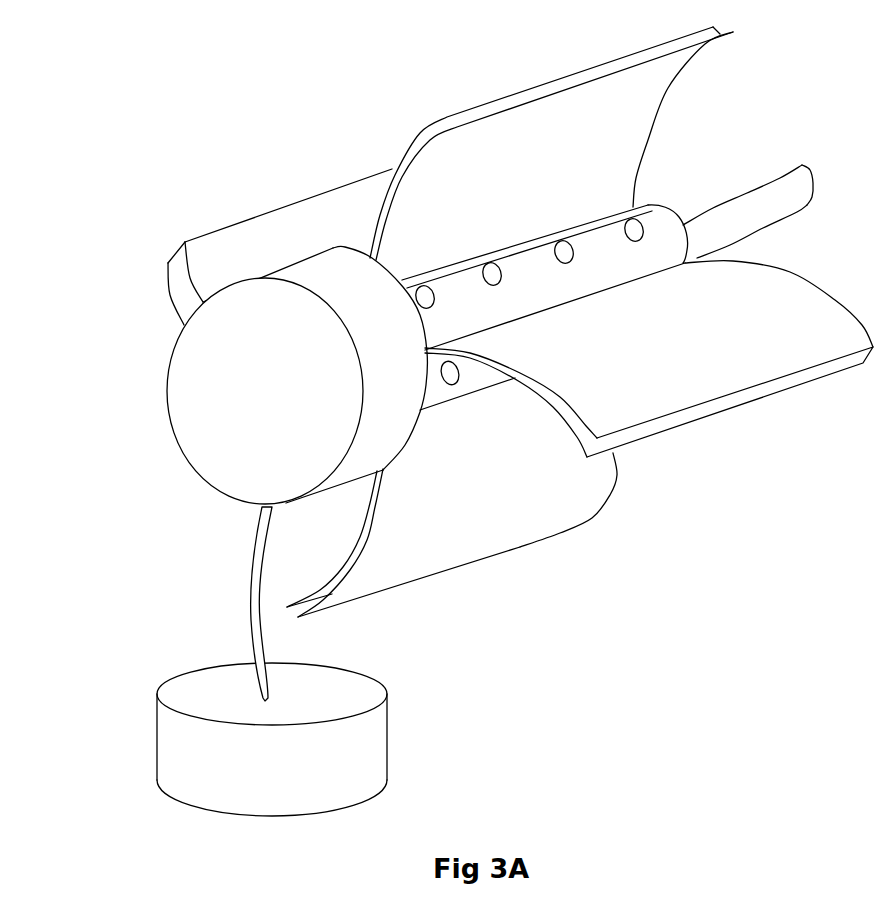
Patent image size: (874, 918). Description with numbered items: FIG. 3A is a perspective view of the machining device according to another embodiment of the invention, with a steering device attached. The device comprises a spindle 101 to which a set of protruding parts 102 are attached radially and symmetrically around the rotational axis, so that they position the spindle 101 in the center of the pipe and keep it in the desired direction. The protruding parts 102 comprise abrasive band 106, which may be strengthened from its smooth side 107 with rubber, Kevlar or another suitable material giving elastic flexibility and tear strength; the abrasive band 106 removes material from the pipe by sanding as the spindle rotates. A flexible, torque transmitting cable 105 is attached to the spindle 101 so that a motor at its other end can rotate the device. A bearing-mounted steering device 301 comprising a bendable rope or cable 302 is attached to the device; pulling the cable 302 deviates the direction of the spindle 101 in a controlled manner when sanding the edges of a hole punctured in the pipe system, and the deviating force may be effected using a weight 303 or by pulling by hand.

The spindle 101 is at (670, 213).
The protruding parts 102 is at (470, 565).
The flexible torque transmitting cable 105 is at (813, 182).
The abrasive band 106 is at (580, 439).
The smooth side 107 is at (450, 176).
The bearing-mounted steering device 301 is at (167, 388).
The bendable rope or cable 302 is at (250, 585).
The weight 303 is at (157, 730).